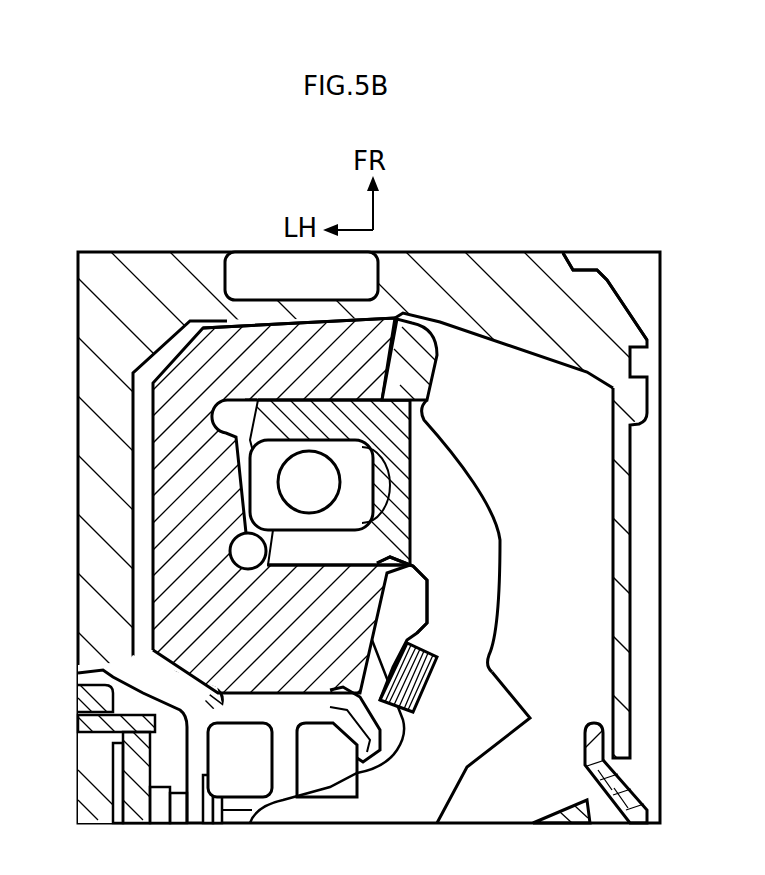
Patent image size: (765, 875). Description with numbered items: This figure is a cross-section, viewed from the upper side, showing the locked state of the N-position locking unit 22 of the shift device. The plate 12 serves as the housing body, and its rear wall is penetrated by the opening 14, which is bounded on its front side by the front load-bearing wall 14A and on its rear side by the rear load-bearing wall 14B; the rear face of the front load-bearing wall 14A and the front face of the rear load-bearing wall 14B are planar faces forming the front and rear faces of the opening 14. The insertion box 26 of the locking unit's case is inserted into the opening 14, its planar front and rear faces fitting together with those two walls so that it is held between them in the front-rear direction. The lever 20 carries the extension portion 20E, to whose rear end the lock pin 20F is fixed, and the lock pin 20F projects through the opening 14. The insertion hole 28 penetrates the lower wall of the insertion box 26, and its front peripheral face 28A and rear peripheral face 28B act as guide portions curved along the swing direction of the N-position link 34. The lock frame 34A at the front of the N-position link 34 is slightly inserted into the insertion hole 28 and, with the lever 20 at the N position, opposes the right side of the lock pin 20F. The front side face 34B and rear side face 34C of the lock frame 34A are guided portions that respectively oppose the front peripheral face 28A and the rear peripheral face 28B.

The plate 12 is at (588, 270).
The opening 14 is at (128, 520).
The front load-bearing wall 14A is at (400, 328).
The rear load-bearing wall 14B is at (330, 683).
The lever 20 is at (377, 467).
The extension portion 20E is at (373, 470).
The lock pin 20F is at (337, 493).
The N-position locking unit 22 is at (525, 625).
The insertion box 26 is at (440, 377).
The insertion hole 28 is at (368, 545).
The front peripheral face 28A is at (393, 395).
The rear peripheral face 28B is at (380, 560).
The N-position link 34 is at (490, 645).
The lock frame 34A is at (413, 520).
The front side face 34B is at (400, 400).
The rear side face 34C is at (393, 575).